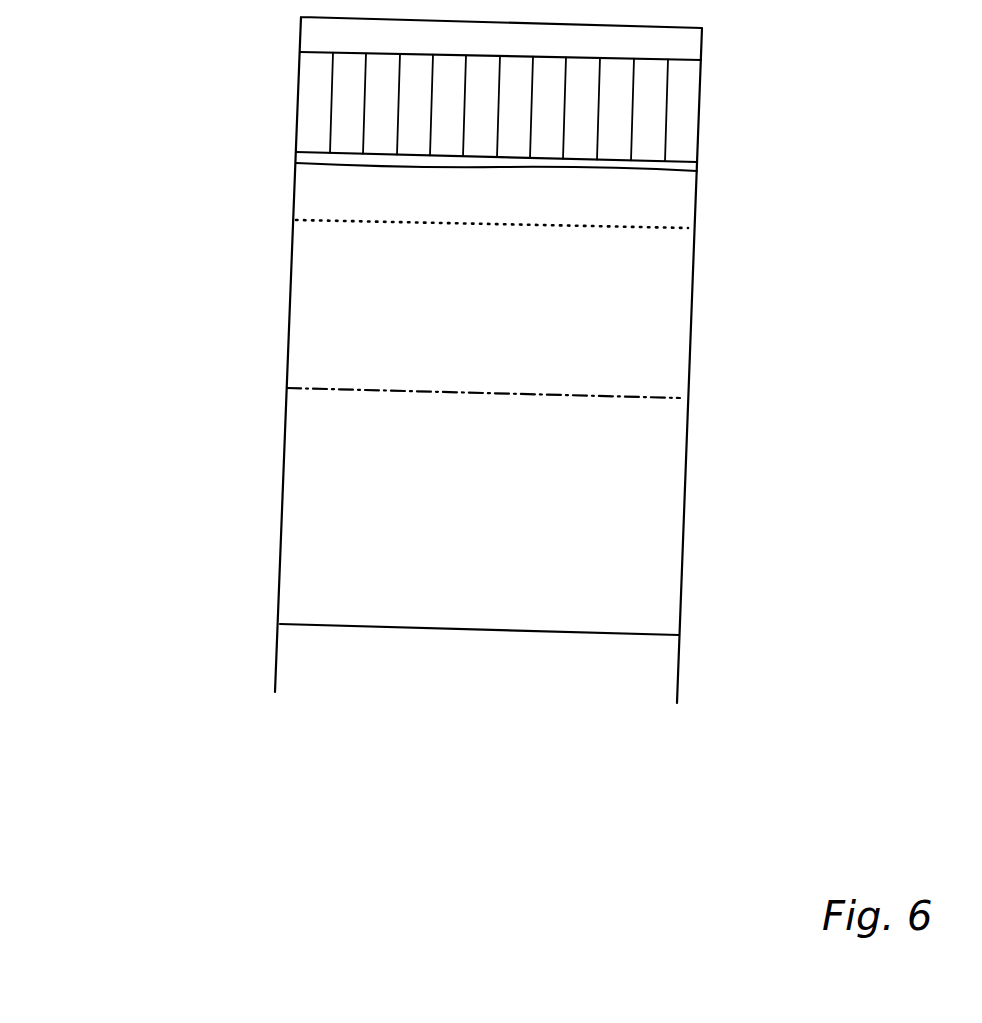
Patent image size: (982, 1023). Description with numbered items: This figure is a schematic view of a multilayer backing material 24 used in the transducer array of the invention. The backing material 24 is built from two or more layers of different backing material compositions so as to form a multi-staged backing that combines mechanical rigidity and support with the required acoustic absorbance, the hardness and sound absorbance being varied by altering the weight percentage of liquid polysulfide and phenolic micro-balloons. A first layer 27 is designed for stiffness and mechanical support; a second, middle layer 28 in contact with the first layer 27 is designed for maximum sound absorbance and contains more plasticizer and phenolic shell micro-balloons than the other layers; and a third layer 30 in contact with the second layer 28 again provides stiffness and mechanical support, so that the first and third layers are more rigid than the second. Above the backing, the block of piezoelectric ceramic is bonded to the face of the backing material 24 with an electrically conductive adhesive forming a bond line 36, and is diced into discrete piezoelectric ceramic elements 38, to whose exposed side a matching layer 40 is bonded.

The backing material 24 is at (240, 367).
The matching layer 40 is at (717, 56).
The piezoelectric ceramic elements 38 is at (718, 117).
The bond line 36 is at (727, 150).
The first layer 27 is at (715, 211).
The second layer 28 is at (714, 331).
The third layer 30 is at (702, 551).